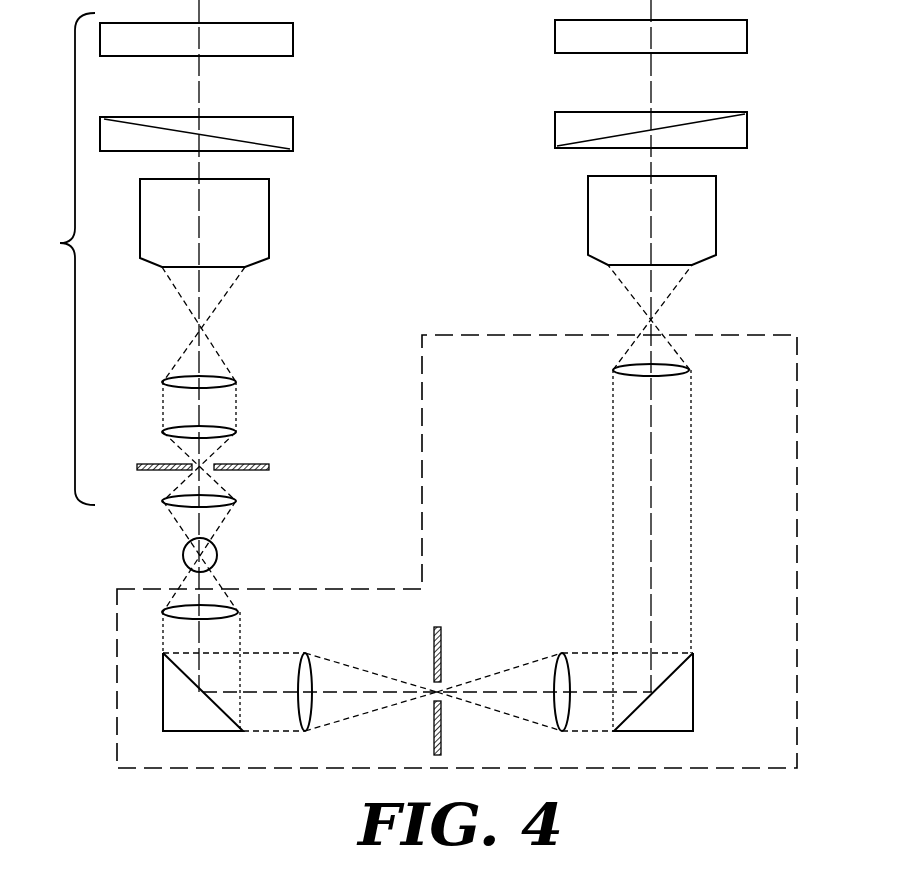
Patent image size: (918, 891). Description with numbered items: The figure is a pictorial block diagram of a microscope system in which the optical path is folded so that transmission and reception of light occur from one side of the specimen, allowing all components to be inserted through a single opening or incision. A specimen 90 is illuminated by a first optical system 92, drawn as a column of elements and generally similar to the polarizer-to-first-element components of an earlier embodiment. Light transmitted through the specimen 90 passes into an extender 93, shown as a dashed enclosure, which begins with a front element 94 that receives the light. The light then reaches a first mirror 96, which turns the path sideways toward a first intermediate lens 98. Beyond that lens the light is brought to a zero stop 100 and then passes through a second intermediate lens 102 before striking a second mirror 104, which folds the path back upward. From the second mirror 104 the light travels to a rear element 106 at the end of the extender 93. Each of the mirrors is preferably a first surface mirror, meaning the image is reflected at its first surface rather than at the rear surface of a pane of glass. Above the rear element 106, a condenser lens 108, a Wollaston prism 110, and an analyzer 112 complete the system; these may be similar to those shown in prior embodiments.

The specimen 90 is at (218, 553).
The first optical system 92 is at (163, 312).
The extender 93 is at (798, 505).
The front element 94 is at (166, 610).
The first mirror 96 is at (172, 705).
The first intermediate lens 98 is at (307, 655).
The zero stop 100 is at (437, 627).
The second intermediate lens 102 is at (562, 655).
The second mirror 104 is at (694, 676).
The rear element 106 is at (690, 372).
The condenser lens 108 is at (717, 228).
The Wollaston prism 110 is at (748, 135).
The analyzer 112 is at (748, 37).